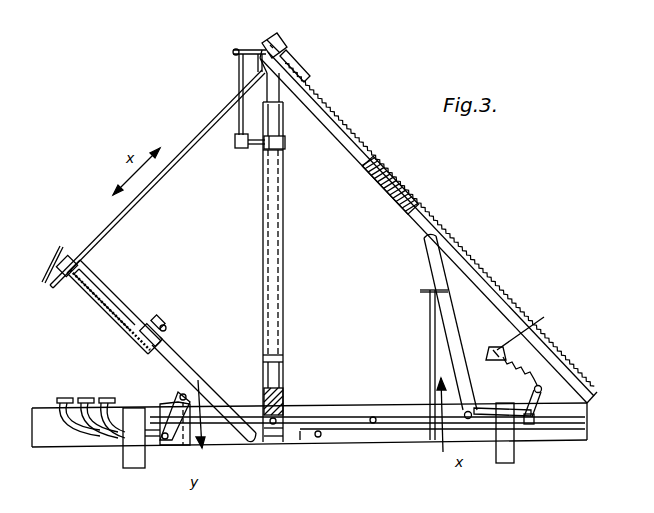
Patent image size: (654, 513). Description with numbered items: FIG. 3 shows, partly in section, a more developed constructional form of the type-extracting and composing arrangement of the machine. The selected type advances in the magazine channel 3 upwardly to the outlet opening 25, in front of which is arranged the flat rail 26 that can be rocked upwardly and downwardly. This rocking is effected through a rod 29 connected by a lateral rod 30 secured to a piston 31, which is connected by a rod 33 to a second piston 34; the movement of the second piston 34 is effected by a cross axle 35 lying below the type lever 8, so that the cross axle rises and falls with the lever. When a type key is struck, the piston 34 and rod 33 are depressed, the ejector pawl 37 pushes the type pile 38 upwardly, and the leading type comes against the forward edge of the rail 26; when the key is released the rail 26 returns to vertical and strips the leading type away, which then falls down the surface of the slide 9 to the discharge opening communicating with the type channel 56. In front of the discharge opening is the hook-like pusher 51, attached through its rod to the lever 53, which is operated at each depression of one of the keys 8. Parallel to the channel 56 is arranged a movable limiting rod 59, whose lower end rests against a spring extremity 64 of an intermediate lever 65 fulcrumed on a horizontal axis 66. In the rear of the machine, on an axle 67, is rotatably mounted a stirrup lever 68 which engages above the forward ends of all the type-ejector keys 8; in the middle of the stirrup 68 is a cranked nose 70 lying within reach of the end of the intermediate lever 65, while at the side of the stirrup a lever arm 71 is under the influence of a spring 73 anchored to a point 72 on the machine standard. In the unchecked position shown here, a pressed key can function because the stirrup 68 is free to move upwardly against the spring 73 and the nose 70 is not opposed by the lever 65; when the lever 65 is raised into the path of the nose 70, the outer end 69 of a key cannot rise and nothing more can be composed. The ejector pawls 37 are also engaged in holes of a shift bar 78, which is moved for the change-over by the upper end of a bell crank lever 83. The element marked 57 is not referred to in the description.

The magazine channel 3 is at (486, 283).
The type lever 8 is at (152, 430).
The slide 9 is at (181, 153).
The outlet opening 25 is at (296, 48).
The flat rail 26 is at (276, 45).
The rod 29 is at (239, 84).
The lateral rod 30 is at (250, 150).
The piston 31 is at (288, 144).
The rod 33 is at (266, 368).
The second piston 34 is at (264, 400).
The cross axle 35 is at (277, 440).
The ejector pawl 37 is at (422, 289).
The type pile 38 is at (404, 188).
The hook-like pusher 51 is at (55, 262).
The lever 53 is at (152, 448).
The type channel 56 is at (145, 362).
The inner tube 57 is at (105, 318).
The limiting rod 59 is at (100, 295).
The spring extremity 64 is at (250, 444).
The intermediate lever 65 is at (366, 432).
The horizontal axis 66 is at (318, 440).
The axle 67 is at (540, 414).
The stirrup lever 68 is at (504, 408).
The outer end 69 is at (472, 410).
The cranked nose 70 is at (532, 423).
The lever arm 71 is at (545, 395).
The anchoring point 72 is at (528, 338).
The spring 73 is at (530, 380).
The shift bar 78 is at (448, 296).
The bell crank lever 83 is at (430, 330).